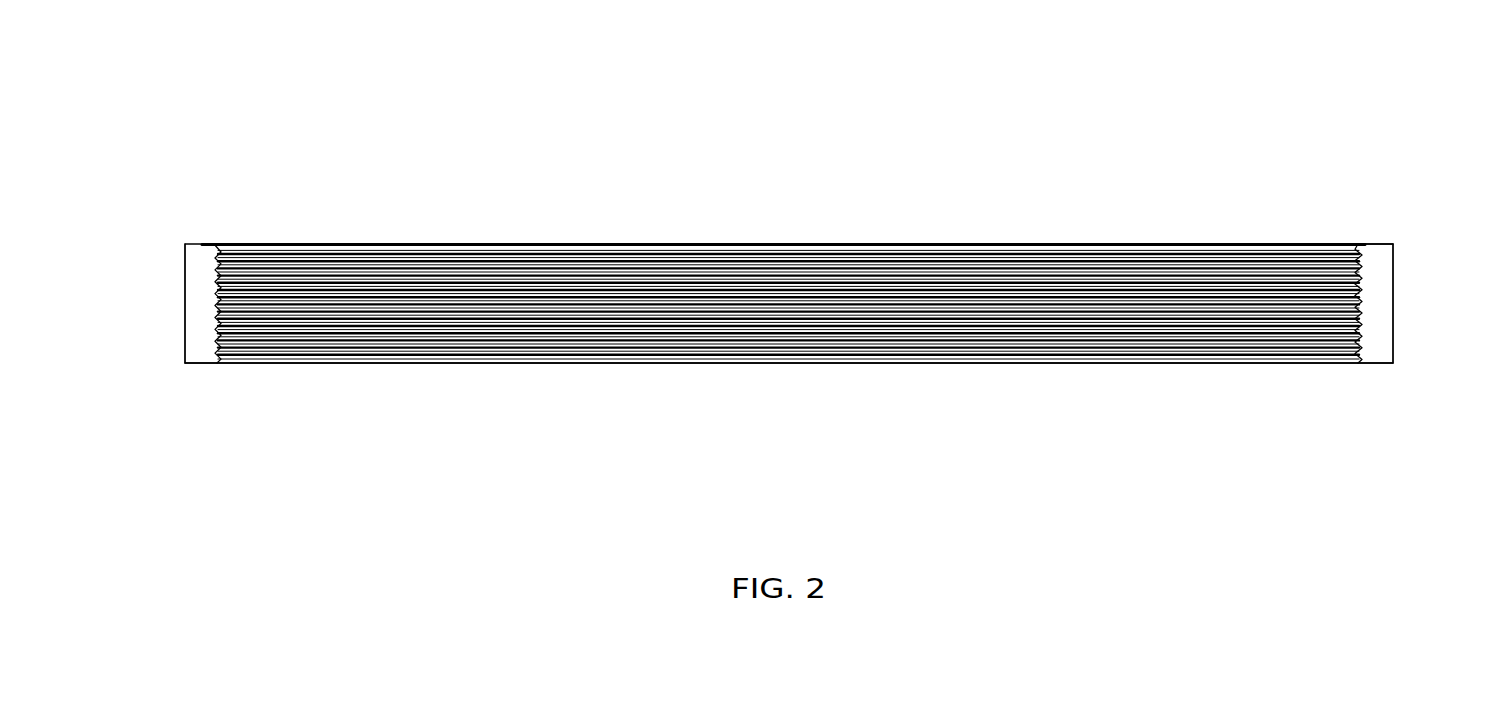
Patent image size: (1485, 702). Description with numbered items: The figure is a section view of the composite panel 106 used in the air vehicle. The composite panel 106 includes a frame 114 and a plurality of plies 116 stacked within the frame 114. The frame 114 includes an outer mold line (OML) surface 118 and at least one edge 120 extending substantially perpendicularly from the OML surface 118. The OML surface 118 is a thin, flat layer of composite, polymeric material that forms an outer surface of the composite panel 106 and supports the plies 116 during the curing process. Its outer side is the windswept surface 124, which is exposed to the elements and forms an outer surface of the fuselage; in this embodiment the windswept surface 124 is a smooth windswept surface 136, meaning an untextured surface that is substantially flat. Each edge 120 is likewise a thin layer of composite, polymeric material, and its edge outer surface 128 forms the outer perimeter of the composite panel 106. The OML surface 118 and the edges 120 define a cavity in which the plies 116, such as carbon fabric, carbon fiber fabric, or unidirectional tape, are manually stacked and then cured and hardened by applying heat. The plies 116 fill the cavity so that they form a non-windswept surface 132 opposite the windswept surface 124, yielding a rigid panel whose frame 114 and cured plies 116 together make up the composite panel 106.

The composite panel 106 is at (527, 86).
The frame 114 is at (1372, 250).
The plies 116 is at (1010, 272).
The outer mold line (OML) surface 118 is at (748, 350).
The edge 120 is at (198, 332).
The windswept surface 124 is at (528, 350).
The edge outer surface 128 is at (188, 280).
The non-windswept surface 132 is at (830, 243).
The smooth windswept surface 136 is at (370, 350).